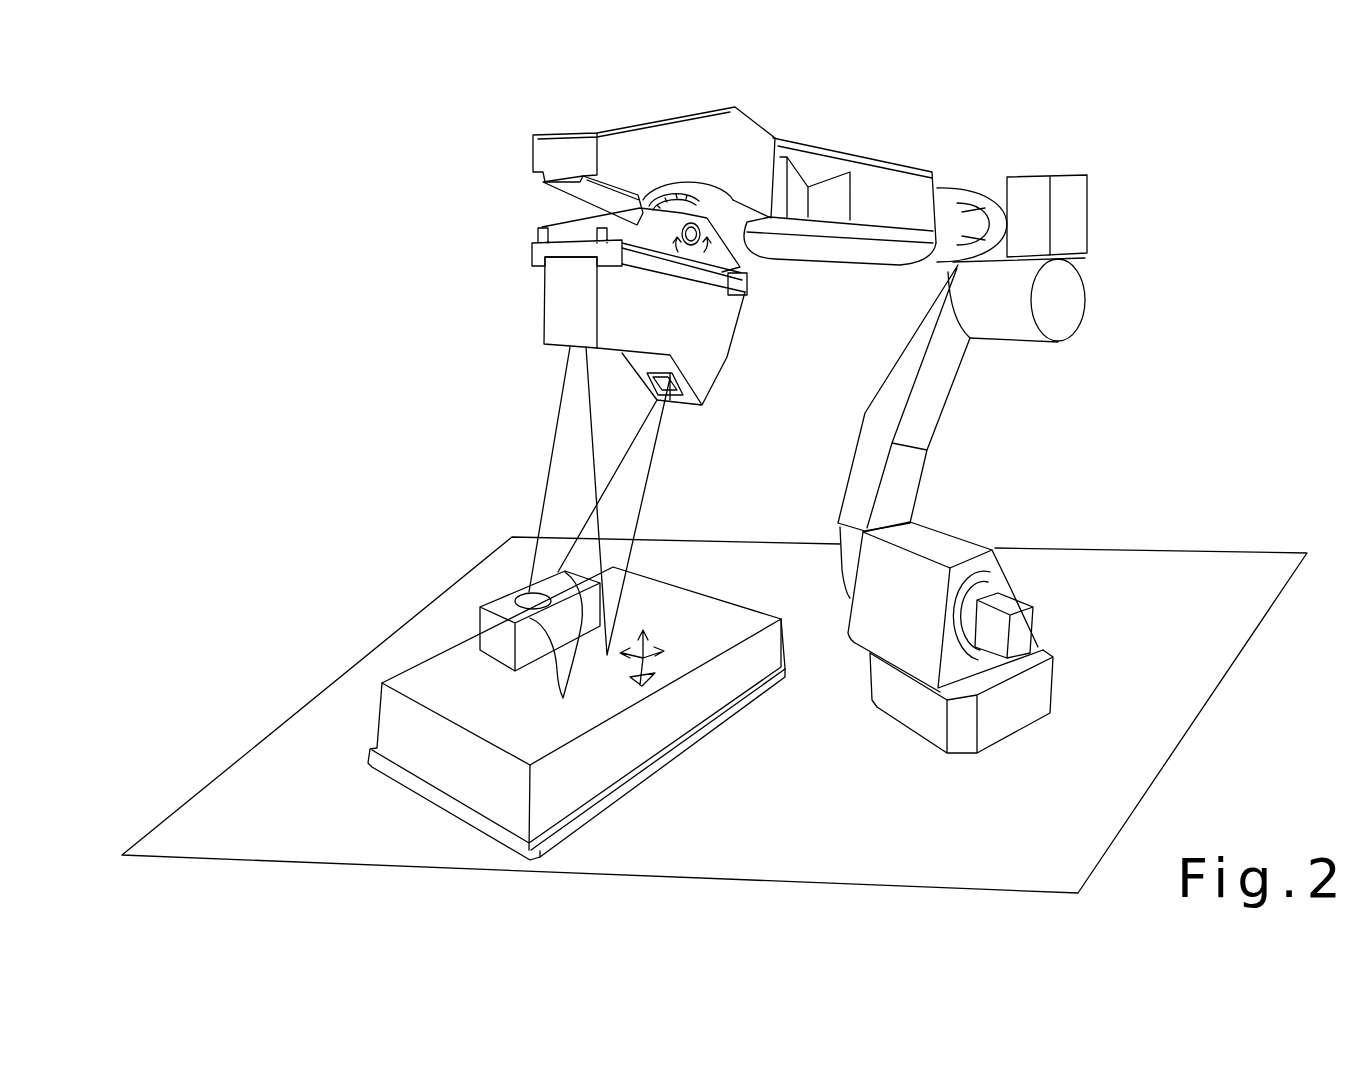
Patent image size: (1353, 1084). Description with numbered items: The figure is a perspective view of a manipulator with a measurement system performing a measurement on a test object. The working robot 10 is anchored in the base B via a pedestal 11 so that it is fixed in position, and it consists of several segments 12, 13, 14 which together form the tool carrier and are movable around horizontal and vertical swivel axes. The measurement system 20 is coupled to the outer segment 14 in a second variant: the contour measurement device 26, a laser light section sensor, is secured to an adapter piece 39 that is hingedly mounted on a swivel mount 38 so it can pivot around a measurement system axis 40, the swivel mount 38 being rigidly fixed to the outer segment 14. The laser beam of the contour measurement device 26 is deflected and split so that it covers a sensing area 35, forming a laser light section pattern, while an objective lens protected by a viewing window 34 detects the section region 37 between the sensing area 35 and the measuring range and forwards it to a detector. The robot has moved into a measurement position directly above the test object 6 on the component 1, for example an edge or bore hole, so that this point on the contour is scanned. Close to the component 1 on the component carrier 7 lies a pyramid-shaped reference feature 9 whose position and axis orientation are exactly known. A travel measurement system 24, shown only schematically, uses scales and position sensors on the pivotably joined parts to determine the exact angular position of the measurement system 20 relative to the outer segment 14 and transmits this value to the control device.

The component 1 is at (495, 640).
The test object 6 is at (556, 650).
The component carrier 7 is at (613, 758).
The reference feature 9 is at (652, 672).
The working robot 10 is at (956, 433).
The pedestal 11 is at (905, 707).
The segment 12 is at (920, 410).
The segment 13 is at (887, 185).
The outer segment 14 is at (745, 126).
The measurement system 20 is at (622, 259).
The travel measurement system 24 is at (642, 200).
The contour measurement device 26 is at (550, 323).
The viewing window 34 is at (672, 406).
The sensing area 35 is at (567, 477).
The section region 37 is at (563, 590).
The swivel mount 38 is at (620, 195).
The adapter piece 39 is at (713, 252).
The measurement system axis 40 is at (745, 294).
The base B is at (1177, 718).